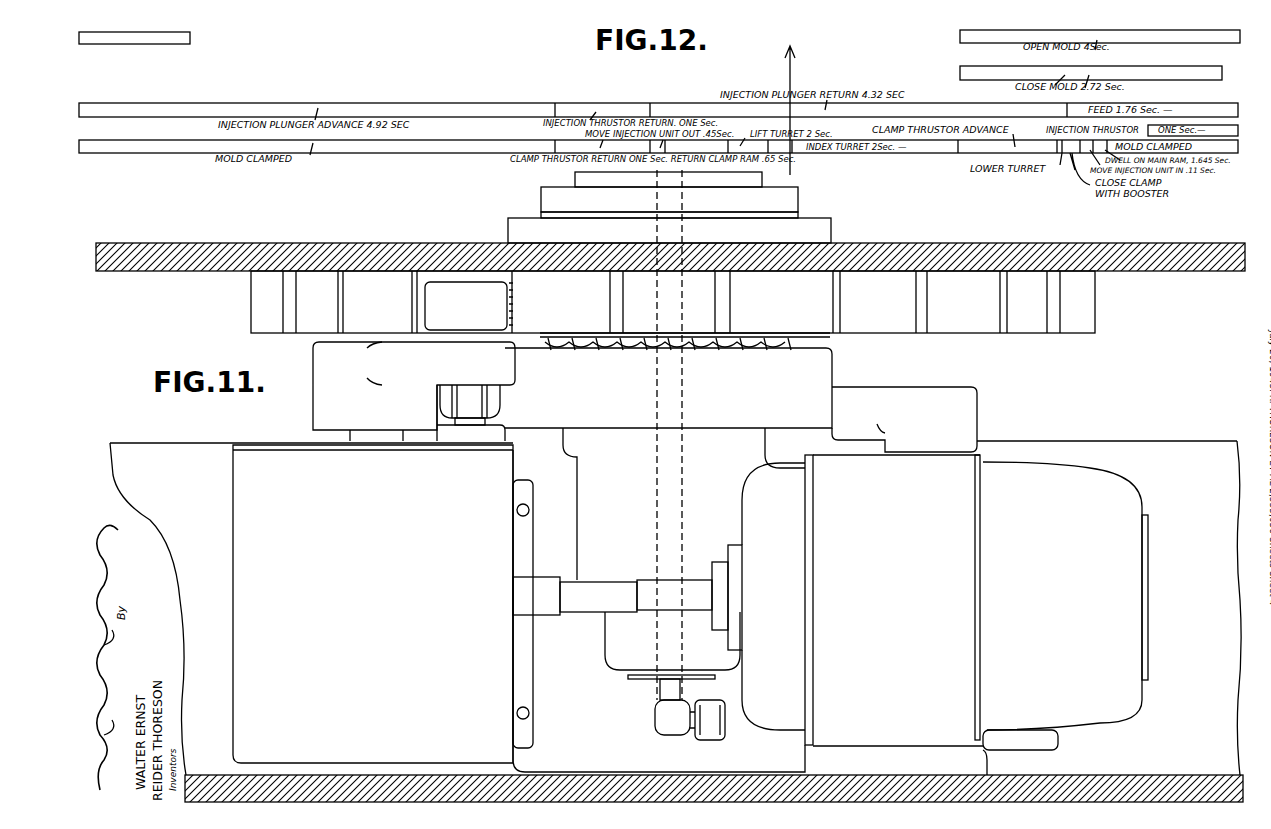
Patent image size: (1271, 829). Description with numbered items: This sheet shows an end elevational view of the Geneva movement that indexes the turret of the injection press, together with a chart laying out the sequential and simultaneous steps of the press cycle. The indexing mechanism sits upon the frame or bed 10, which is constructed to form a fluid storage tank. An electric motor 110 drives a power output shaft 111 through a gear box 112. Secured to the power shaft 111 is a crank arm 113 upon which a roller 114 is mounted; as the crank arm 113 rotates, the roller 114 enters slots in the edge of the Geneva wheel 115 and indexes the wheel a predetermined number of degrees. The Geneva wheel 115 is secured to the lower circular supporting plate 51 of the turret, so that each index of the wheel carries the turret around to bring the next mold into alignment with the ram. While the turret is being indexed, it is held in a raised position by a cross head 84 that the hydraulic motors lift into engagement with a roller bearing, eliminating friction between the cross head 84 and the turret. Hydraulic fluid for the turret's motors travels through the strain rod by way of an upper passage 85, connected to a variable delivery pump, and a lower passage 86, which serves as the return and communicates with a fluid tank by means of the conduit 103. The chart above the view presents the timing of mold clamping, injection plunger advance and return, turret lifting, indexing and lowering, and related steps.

The frame or bed 10 is at (1145, 777).
The lower circular supporting plate 51 is at (1136, 246).
The cross head 84 is at (820, 378).
The upper passage 85 is at (780, 344).
The lower passage 86 is at (672, 480).
The conduit 103 is at (738, 722).
The electric motor 110 is at (1050, 485).
The power output shaft 111 is at (350, 435).
The gear box 112 is at (428, 599).
The crank arm 113 is at (500, 360).
The roller 114 is at (441, 292).
The Geneva wheel 115 is at (1072, 320).